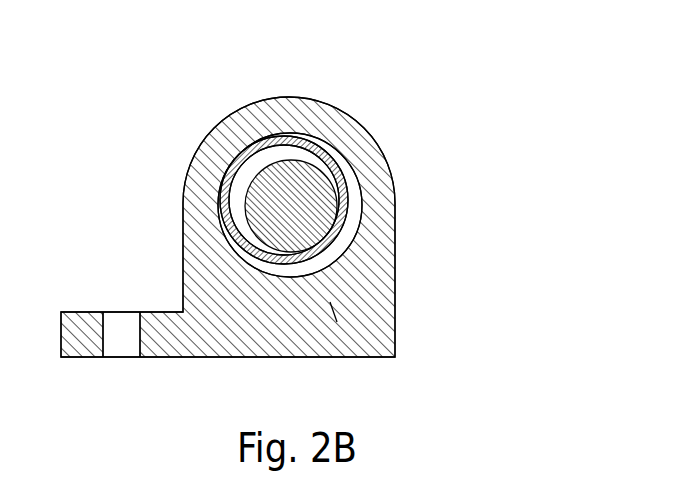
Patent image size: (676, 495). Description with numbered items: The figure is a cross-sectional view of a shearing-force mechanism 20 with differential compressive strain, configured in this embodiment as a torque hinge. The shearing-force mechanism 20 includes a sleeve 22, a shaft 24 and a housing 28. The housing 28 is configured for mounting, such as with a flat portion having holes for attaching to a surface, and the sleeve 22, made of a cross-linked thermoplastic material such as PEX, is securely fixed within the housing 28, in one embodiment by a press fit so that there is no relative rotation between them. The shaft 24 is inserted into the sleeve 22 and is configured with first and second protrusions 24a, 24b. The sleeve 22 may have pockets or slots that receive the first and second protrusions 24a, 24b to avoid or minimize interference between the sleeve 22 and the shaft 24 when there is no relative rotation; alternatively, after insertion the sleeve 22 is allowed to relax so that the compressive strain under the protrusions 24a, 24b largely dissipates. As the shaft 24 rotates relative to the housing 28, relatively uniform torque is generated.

The shearing-force mechanism 20 is at (281, 238).
The sleeve 22 is at (362, 193).
The shaft 24 is at (302, 187).
The first protrusion 24a is at (292, 155).
The second protrusion 24b is at (362, 345).
The housing 28 is at (370, 295).